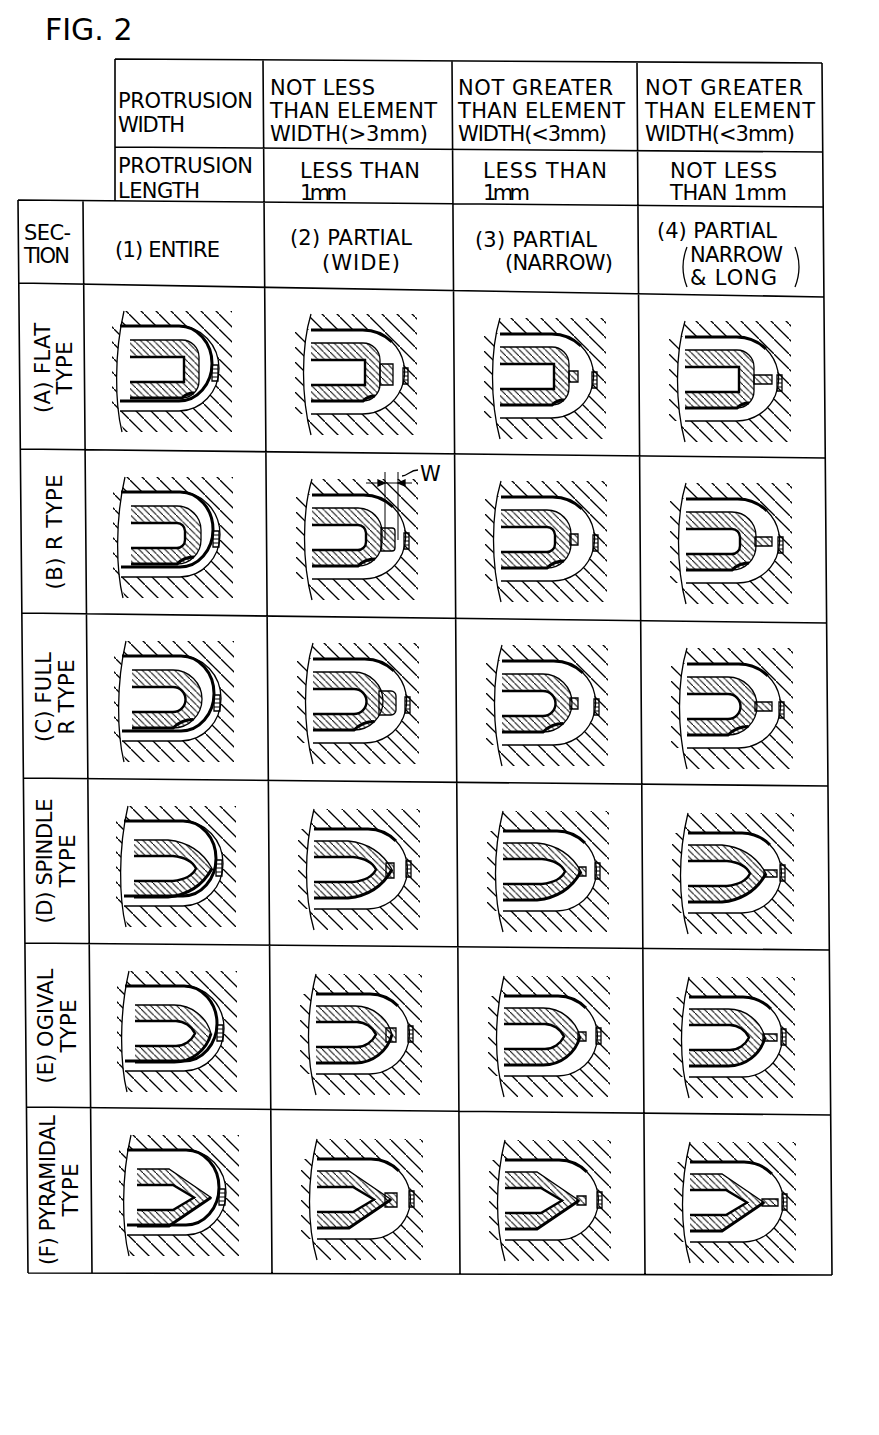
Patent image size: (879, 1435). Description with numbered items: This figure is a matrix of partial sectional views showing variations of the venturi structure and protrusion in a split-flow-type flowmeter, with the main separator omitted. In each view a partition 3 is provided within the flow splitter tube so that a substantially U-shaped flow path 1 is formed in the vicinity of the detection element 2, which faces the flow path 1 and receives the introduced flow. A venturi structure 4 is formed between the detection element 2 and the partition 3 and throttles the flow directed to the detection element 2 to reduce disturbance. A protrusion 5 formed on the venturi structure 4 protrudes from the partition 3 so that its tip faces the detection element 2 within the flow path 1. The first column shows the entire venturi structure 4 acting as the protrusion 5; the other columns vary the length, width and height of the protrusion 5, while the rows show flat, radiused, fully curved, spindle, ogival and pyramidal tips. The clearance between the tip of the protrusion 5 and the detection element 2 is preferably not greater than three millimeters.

The flow path 1 is at (427, 778).
The detection element 2 is at (516, 776).
The partition 3 is at (446, 759).
The venturi structure 4 is at (462, 795).
The protrusion 5 is at (471, 784).